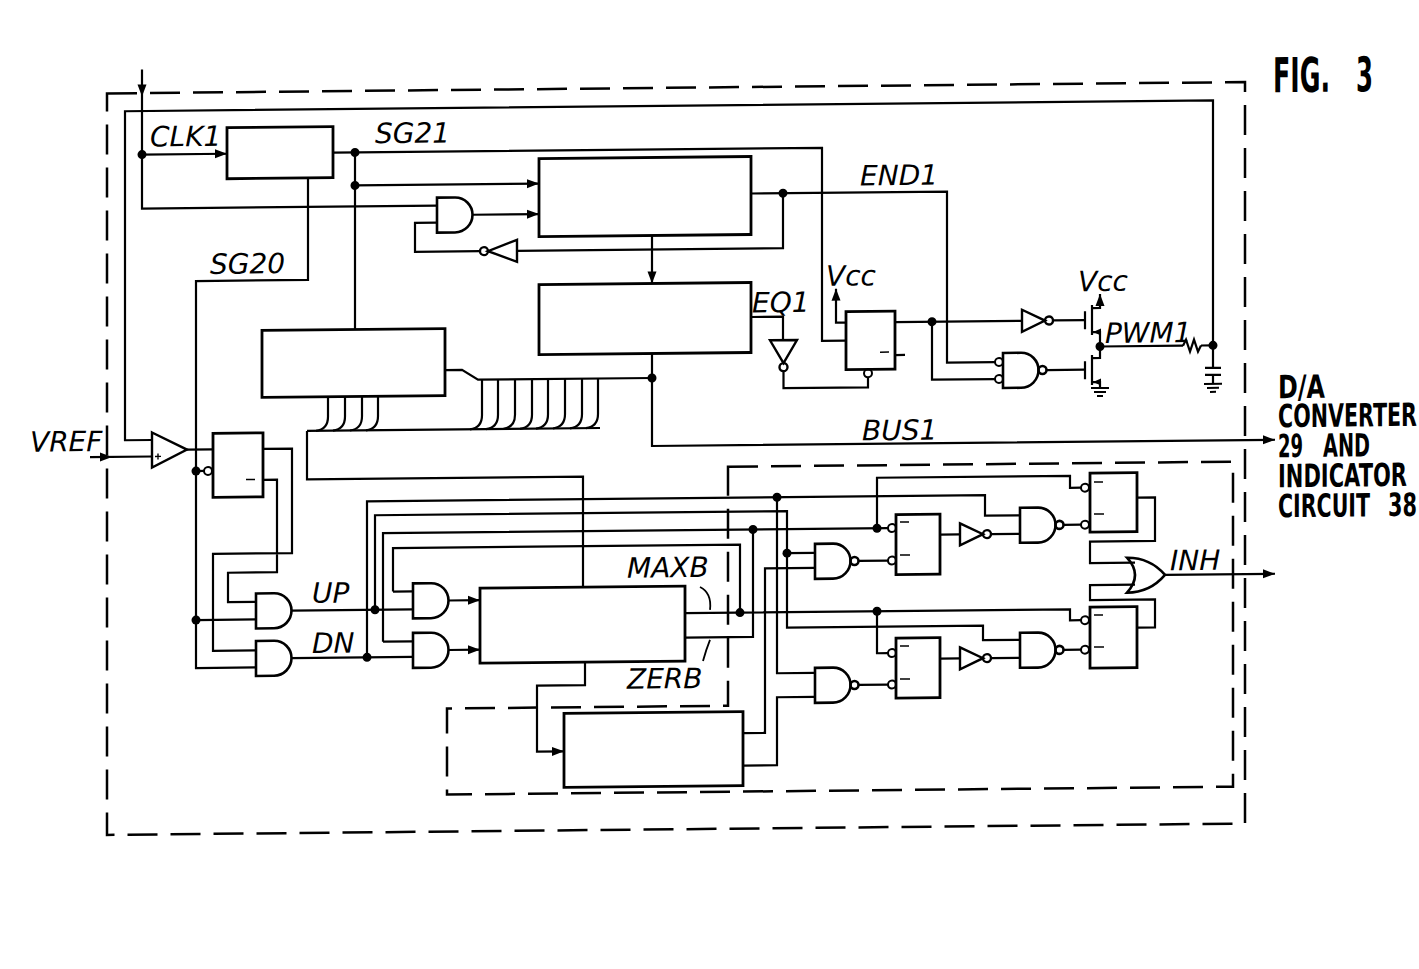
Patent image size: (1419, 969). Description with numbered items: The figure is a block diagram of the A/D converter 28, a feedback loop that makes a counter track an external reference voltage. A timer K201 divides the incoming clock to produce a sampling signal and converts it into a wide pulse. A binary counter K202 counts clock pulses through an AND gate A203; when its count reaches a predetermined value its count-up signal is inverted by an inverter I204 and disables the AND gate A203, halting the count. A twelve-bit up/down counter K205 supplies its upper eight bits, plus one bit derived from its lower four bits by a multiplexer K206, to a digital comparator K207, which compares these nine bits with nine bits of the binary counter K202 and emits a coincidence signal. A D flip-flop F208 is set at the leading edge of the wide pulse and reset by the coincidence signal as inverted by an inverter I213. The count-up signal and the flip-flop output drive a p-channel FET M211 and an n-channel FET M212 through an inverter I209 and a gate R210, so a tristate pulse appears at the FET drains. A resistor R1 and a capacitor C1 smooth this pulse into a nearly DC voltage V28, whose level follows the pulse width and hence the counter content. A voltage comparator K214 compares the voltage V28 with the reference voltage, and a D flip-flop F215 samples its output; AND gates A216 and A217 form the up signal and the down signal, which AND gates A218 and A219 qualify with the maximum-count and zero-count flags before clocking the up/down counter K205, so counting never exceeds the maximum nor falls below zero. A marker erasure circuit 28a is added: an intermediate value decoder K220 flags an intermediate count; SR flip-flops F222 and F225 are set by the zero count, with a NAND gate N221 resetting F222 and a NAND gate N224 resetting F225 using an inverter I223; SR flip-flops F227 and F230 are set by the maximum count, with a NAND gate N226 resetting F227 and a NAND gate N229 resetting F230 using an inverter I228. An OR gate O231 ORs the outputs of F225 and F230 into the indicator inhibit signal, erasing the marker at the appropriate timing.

The timer K201 is at (247, 176).
The binary counter K202 is at (539, 169).
The AND gate A203 is at (428, 212).
The inverter I204 is at (497, 262).
The 12-bit up/down counter K205 is at (545, 662).
The multiplexer K206 is at (318, 327).
The digital comparator K207 is at (538, 303).
The D flip-flop F208 is at (877, 314).
The inverter I209 is at (1040, 318).
The NOR gate R210 is at (1042, 394).
The p-channel FET M211 is at (1105, 323).
The n-channel FET M212 is at (1106, 378).
The inverter I213 is at (772, 373).
The voltage comparator K214 is at (172, 458).
The D flip-flop F215 is at (240, 428).
The AND gate A216 is at (291, 588).
The AND gate A217 is at (275, 673).
The AND gate A218 is at (425, 579).
The AND gate A219 is at (437, 666).
The intermediate value decoder K220 is at (564, 765).
The NAND gate N221 is at (825, 582).
The SR flip-flop F222 is at (940, 571).
The inverter I223 is at (972, 549).
The NAND gate N224 is at (1066, 517).
The SR flip-flop F225 is at (1138, 486).
The NAND gate N226 is at (825, 707).
The SR flip-flop F227 is at (933, 705).
The inverter I228 is at (973, 676).
The NAND gate N229 is at (1070, 673).
The SR flip-flop F230 is at (1138, 661).
The OR gate O231 is at (1155, 592).
The resistor R1 is at (1190, 356).
The capacitor C1 is at (1203, 378).
The A/D converter 28 is at (1045, 822).
The marker erasure circuit 28a is at (1113, 780).
The voltage V28 is at (669, 270).